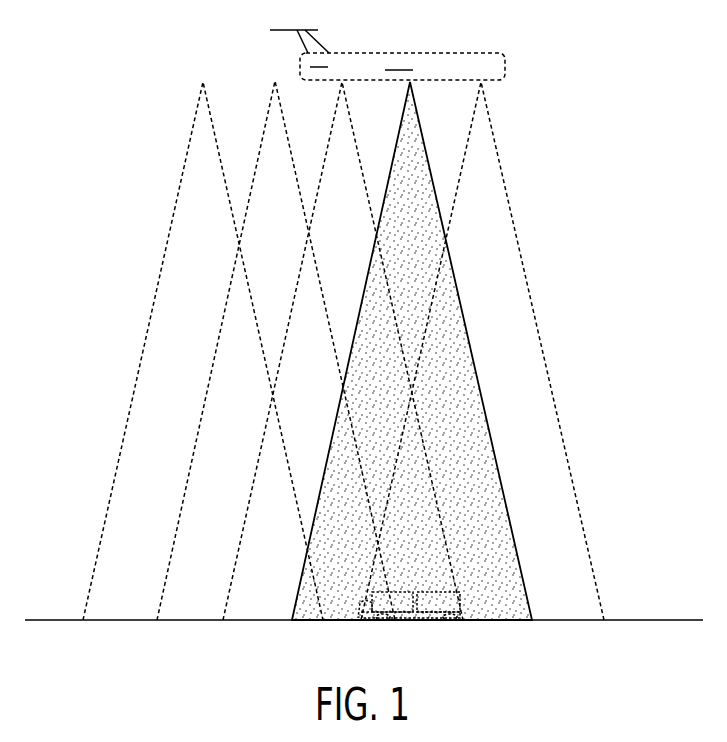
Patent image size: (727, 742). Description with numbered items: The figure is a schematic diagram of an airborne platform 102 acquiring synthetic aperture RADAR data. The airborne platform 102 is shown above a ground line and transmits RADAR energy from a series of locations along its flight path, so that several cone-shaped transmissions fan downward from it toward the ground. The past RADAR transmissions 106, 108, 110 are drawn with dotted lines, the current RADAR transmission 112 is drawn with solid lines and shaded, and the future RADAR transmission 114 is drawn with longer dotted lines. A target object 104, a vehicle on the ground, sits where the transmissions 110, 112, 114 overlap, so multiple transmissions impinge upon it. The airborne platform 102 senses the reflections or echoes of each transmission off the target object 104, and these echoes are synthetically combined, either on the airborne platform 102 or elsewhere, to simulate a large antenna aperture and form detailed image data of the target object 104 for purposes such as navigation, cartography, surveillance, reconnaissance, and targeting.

The airborne platform 102 is at (505, 67).
The target object 104 is at (460, 598).
The past RADAR transmission 106 is at (189, 143).
The past RADAR transmission 108 is at (271, 89).
The past RADAR transmission 110 is at (386, 266).
The current RADAR transmission 112 is at (428, 160).
The future RADAR transmission 114 is at (545, 357).